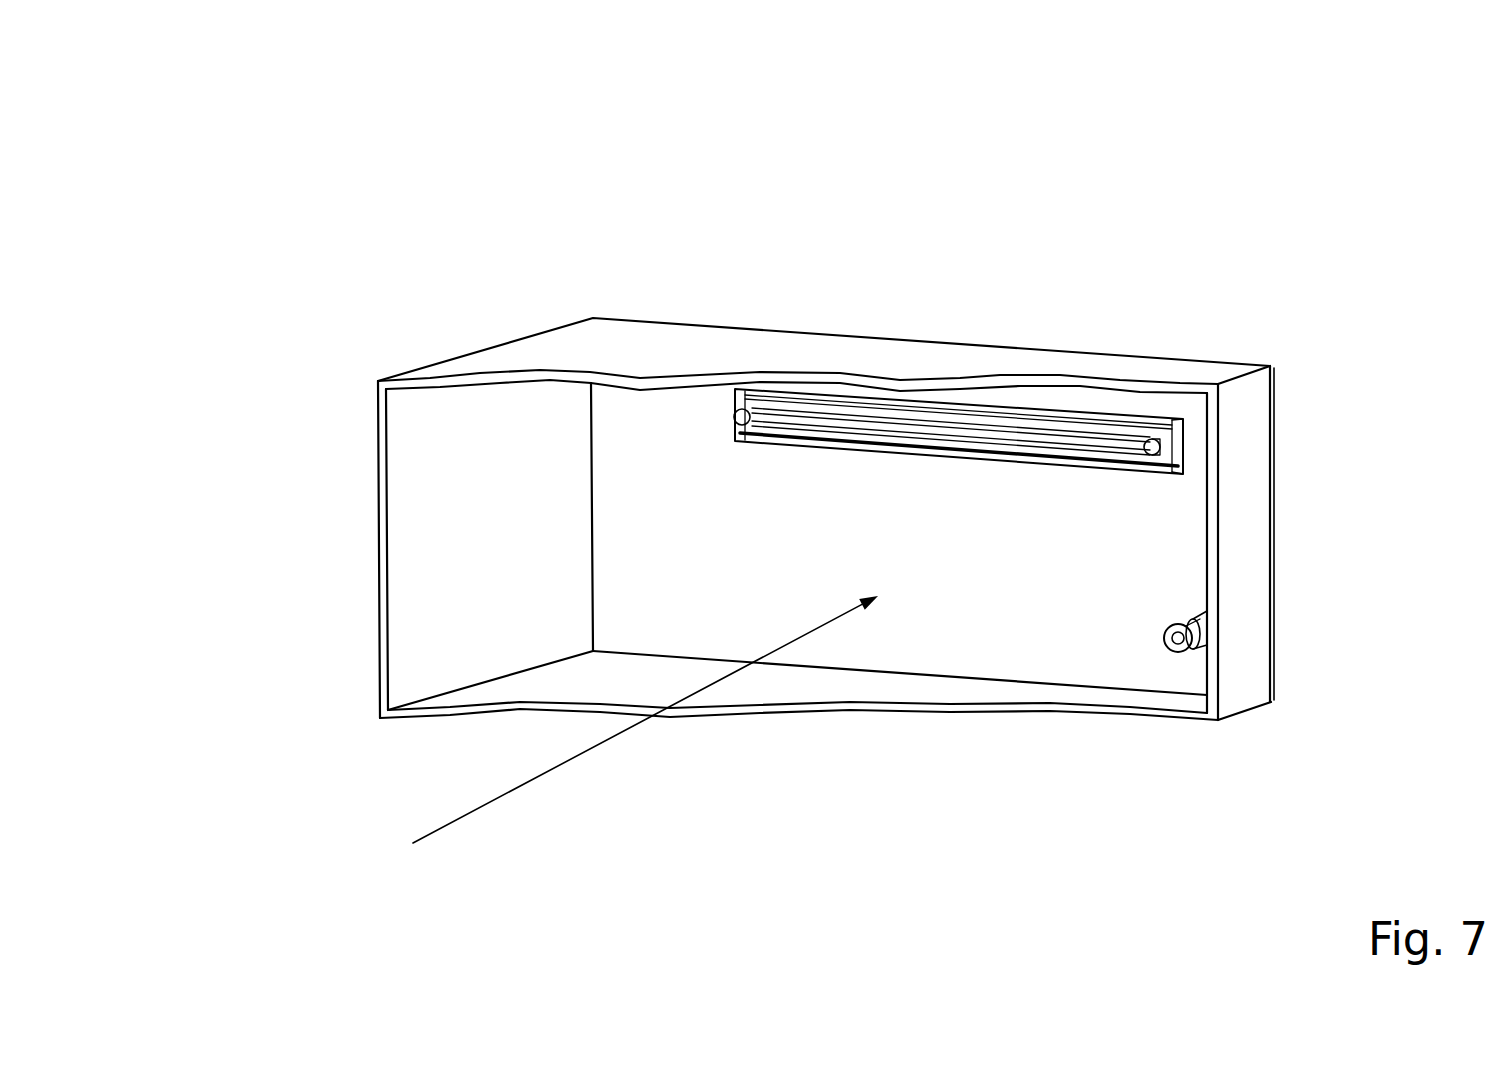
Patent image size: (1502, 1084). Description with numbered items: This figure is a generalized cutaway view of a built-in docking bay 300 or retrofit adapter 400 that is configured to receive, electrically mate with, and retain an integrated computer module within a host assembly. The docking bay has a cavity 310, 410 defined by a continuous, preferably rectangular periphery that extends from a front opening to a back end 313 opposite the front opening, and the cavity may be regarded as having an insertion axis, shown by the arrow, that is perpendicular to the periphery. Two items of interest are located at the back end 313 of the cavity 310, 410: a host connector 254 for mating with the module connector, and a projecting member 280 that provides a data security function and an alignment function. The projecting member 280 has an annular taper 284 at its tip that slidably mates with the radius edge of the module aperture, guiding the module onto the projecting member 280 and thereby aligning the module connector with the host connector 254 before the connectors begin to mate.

The built-in docking bay 300 is at (826, 403).
The retrofit adapter 400 is at (1090, 135).
The cavity 310 is at (667, 547).
The cavity 410 is at (479, 526).
The back end 313 is at (1152, 540).
The host connector 254 is at (1052, 422).
The projecting member 280 is at (1210, 624).
The annular taper 284 is at (1187, 650).